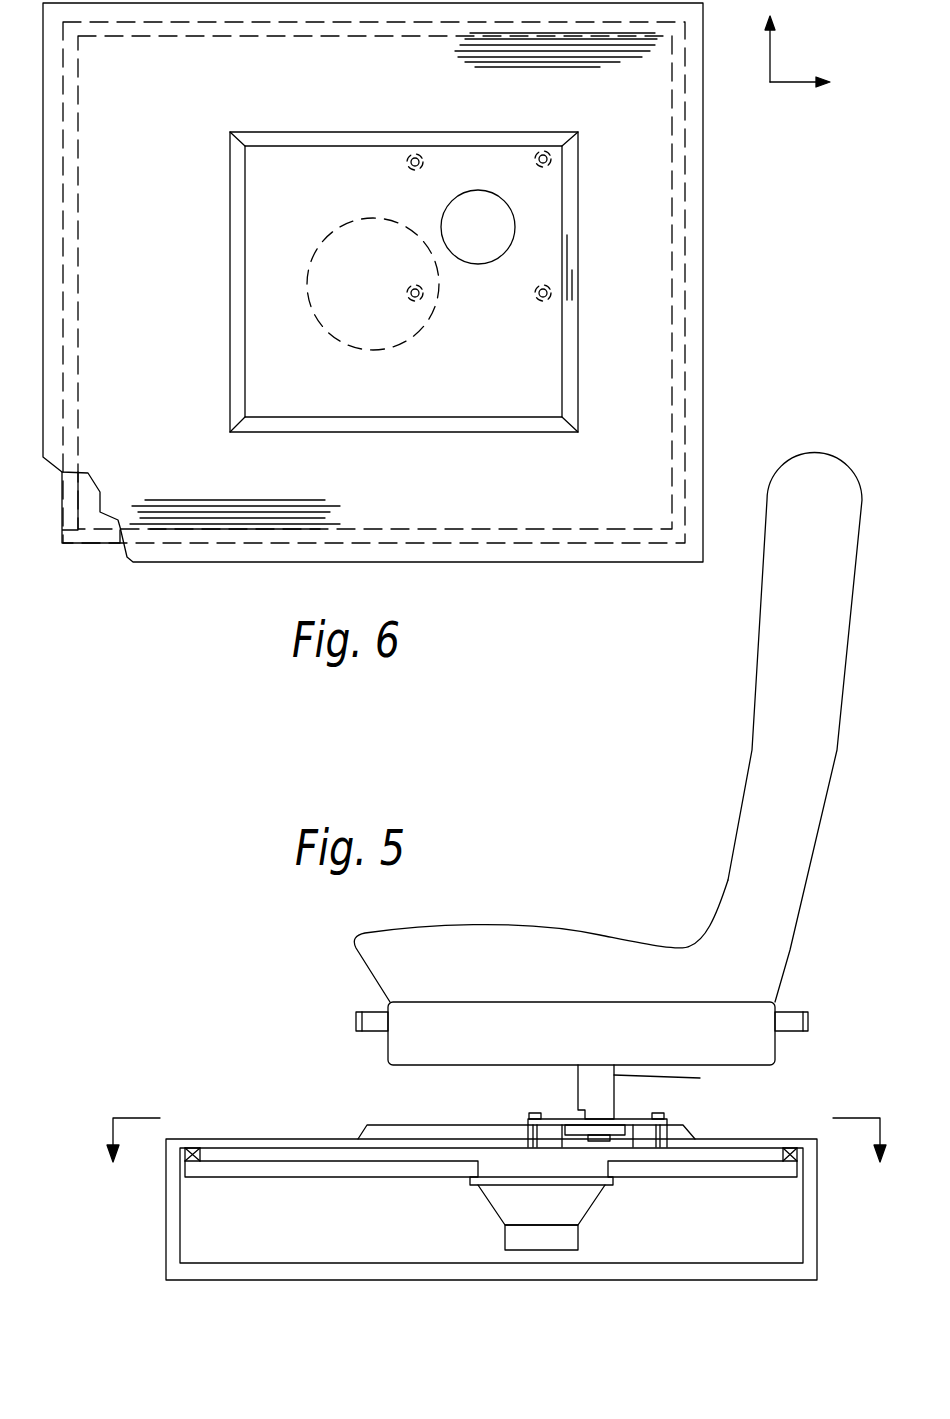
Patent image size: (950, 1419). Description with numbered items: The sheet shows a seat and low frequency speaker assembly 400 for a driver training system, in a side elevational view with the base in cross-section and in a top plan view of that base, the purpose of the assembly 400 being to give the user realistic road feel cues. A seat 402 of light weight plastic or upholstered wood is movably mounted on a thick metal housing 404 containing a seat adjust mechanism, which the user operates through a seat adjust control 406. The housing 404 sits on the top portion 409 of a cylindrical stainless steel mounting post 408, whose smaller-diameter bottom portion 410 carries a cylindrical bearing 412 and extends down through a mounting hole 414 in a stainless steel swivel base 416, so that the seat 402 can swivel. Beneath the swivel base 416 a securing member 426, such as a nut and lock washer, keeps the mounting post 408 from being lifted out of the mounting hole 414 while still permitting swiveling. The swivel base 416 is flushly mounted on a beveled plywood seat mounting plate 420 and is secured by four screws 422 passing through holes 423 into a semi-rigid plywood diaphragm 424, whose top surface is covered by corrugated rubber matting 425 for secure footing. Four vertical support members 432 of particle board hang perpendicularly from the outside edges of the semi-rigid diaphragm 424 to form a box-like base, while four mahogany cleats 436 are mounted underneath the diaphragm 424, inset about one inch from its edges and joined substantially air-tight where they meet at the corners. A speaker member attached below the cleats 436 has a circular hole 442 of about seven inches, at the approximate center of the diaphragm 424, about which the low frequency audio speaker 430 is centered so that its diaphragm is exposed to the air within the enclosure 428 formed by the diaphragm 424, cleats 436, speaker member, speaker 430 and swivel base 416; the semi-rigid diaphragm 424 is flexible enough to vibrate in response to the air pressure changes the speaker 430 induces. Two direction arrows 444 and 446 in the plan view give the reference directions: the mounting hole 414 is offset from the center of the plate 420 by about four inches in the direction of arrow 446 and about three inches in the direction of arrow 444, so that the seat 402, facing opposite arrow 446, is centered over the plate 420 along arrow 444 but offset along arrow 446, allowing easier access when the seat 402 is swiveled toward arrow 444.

In FIG. 5, the seat and low frequency speaker assembly 400 is at (562, 840).
In FIG. 5, the seat 402 is at (760, 648).
In FIG. 5, the housing 404 is at (388, 1040).
In FIG. 5, the seat adjust control 406 is at (356, 1012).
In FIG. 5, the mounting post 408 is at (572, 1088).
In FIG. 5, the top portion 409 is at (700, 1078).
In FIG. 5, the bottom portion 410 is at (595, 1142).
In FIG. 5, the cylindrical bearing 412 is at (614, 1120).
In FIG. 6, the mounting hole 414 is at (515, 221).
In FIG. 5, the swivel base 416 is at (530, 1116).
In FIG. 6, the seat mounting plate 420 is at (547, 183).
In FIG. 5, the seat mounting plate 420 is at (356, 1130).
In FIG. 5, the screws 422 is at (664, 1116).
In FIG. 6, the holes 423 is at (550, 293).
In FIG. 6, the semi-rigid diaphragm 424 is at (647, 345).
In FIG. 5, the semi-rigid diaphragm 424 is at (198, 1139).
In FIG. 6, the corrugated rubber matting 425 is at (187, 515).
In FIG. 5, the securing member 426 is at (620, 1136).
In FIG. 5, the enclosure 428 is at (272, 1157).
In FIG. 5, the low frequency audio speaker 430 is at (478, 1196).
In FIG. 5, the vertical support members 432 is at (163, 1165).
In FIG. 6, the cleats 436 is at (62, 513).
In FIG. 6, the circular hole 442 is at (394, 350).
In FIG. 6, the direction arrow 444 is at (775, 43).
In FIG. 6, the direction arrow 446 is at (790, 85).